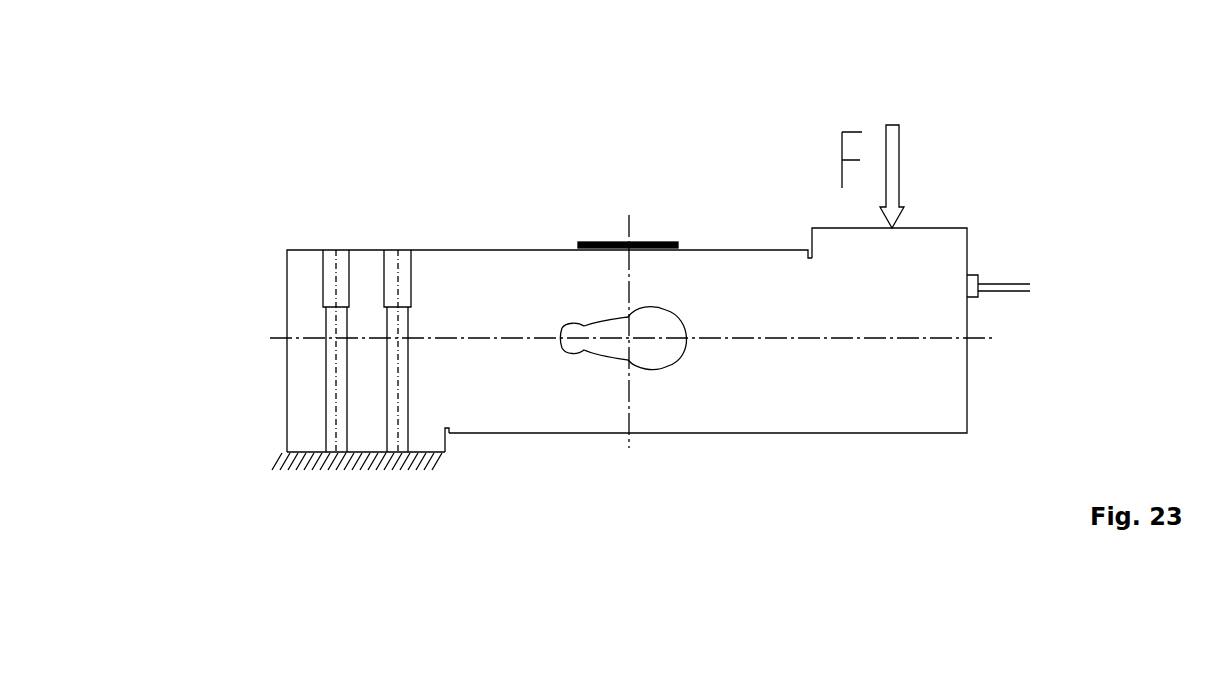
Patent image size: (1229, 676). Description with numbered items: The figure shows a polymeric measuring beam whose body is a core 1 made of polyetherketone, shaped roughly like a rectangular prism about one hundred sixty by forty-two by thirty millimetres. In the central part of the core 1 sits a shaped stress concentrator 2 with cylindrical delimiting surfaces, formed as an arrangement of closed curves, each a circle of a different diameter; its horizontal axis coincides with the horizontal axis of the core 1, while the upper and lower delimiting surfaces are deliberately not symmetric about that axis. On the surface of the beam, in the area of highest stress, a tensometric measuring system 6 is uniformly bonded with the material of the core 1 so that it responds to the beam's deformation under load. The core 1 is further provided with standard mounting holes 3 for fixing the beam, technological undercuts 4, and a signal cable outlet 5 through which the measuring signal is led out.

The core 1 is at (298, 430).
The stress concentrator 2 is at (662, 368).
The mounting holes 3 is at (331, 402).
The technological undercuts 4 is at (808, 248).
The signal cable outlet 5 is at (1030, 287).
The tensometric measuring system 6 is at (585, 243).